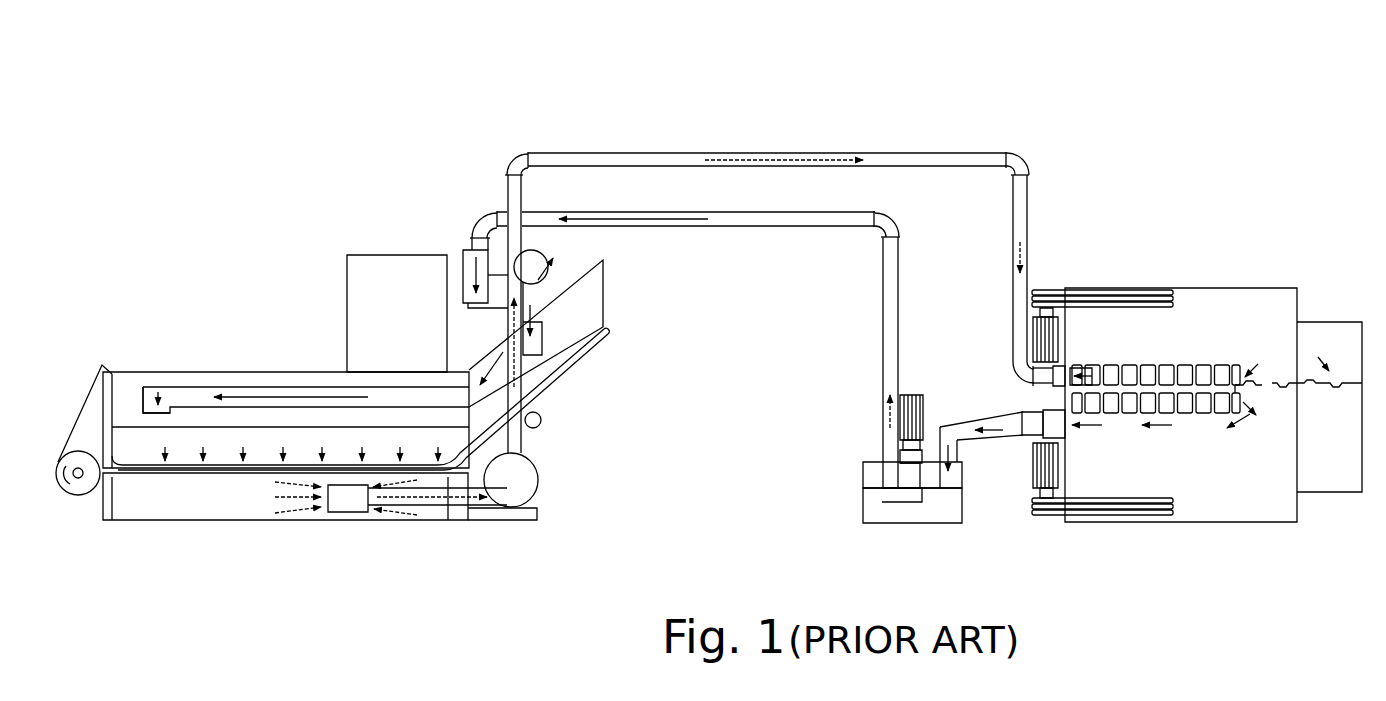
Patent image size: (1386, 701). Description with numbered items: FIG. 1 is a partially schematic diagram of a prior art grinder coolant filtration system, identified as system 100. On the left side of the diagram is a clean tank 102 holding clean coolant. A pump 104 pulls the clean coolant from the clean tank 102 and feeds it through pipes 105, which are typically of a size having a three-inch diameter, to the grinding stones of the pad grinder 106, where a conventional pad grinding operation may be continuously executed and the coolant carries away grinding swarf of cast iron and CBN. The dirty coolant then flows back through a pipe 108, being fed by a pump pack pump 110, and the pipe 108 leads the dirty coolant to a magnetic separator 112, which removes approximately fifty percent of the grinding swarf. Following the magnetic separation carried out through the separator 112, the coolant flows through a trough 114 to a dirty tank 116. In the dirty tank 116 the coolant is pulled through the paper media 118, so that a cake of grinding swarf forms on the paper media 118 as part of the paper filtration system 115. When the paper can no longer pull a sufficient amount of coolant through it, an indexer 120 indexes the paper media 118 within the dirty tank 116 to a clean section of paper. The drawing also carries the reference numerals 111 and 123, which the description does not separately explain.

The system 100 is at (1084, 143).
The clean tank 102 is at (392, 512).
The pump 104 is at (538, 481).
The pipes 105 is at (940, 153).
The pad grinder 106 is at (1107, 288).
The pipe 108 is at (973, 438).
The pump pack pump 110 is at (917, 417).
The return pipe 111 is at (908, 290).
The magnetic separator 112 is at (543, 275).
The trough 114 is at (253, 395).
The paper filtration system 115 is at (391, 208).
The dirty tank 116 is at (200, 425).
The paper media 118 is at (592, 358).
The indexer 120 is at (78, 496).
The roller 123 is at (541, 423).